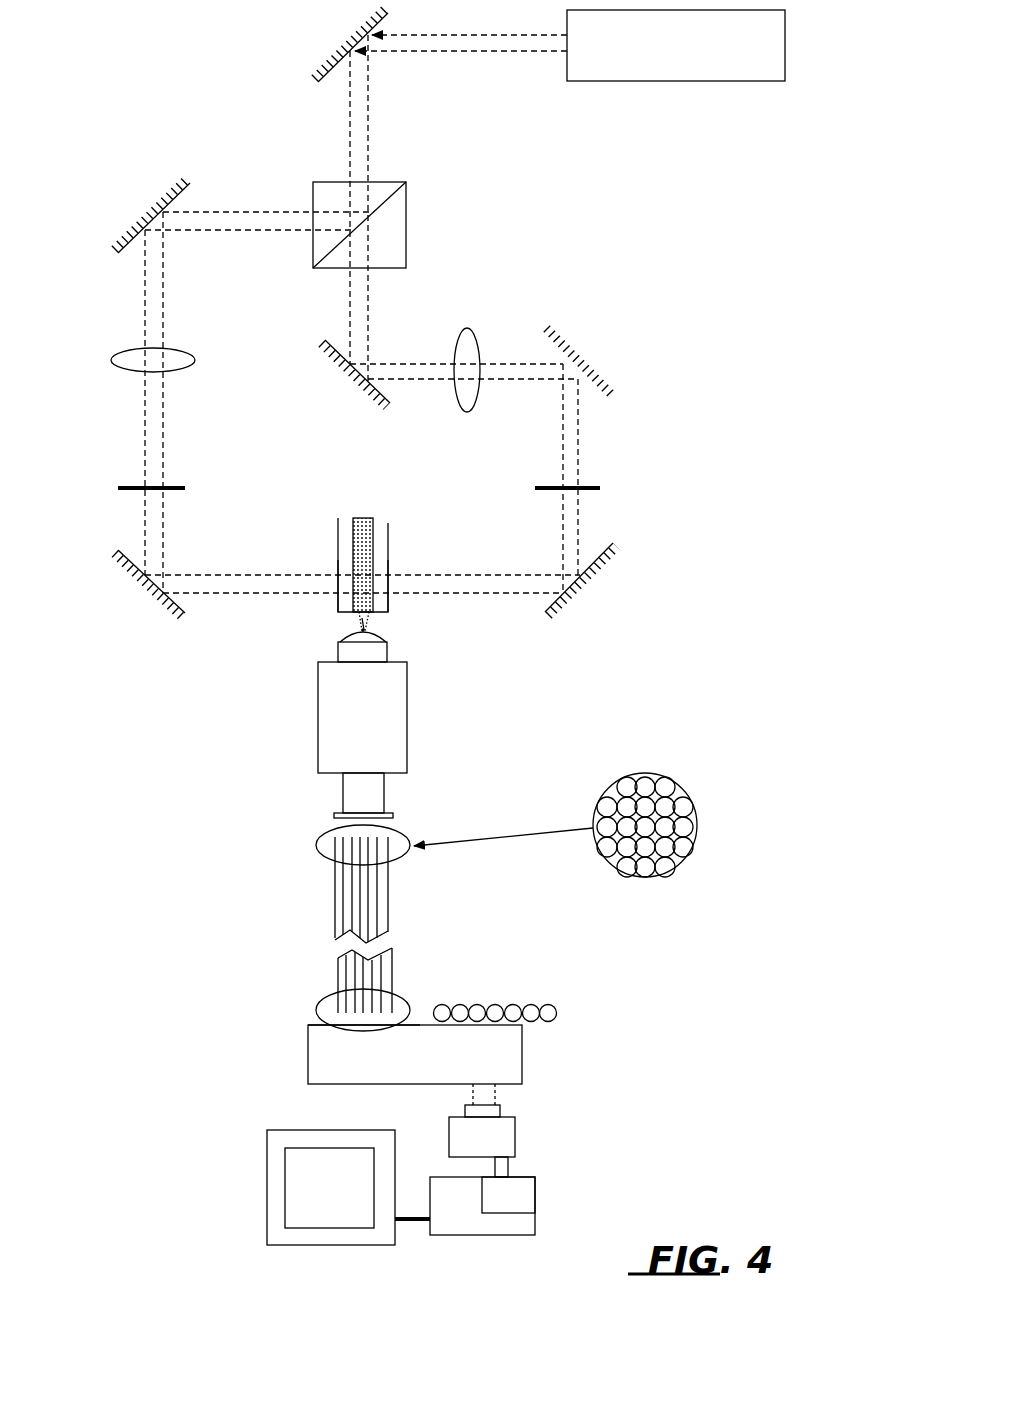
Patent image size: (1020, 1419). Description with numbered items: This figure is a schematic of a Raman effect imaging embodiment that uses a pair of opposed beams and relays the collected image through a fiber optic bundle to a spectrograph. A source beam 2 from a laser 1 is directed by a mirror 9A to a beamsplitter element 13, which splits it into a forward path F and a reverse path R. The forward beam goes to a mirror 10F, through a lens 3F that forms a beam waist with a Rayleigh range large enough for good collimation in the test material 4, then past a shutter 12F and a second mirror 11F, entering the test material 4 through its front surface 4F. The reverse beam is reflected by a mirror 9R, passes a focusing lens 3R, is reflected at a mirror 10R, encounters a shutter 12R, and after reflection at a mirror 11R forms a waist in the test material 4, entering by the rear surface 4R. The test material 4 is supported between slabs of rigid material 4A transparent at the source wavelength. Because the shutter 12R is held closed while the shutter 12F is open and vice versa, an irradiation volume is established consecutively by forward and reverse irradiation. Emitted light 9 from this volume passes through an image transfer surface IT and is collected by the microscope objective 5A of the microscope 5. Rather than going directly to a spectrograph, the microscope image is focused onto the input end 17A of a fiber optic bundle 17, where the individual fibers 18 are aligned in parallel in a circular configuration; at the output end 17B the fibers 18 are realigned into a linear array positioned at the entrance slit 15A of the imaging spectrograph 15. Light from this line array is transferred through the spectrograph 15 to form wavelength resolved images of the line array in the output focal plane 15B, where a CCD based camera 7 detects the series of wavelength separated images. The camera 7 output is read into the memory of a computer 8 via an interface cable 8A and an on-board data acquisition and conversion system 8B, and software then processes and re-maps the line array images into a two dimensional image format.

The laser 1 is at (676, 45).
The source beam 2 is at (458, 193).
The mirror 9A is at (345, 45).
The beamsplitter element 13 is at (380, 225).
The forward beam path F is at (256, 207).
The reverse beam path R is at (374, 311).
The mirror 10F is at (144, 212).
The mirror 10R is at (587, 359).
The mirror 9R is at (346, 373).
The lens 3F is at (135, 361).
The focusing lens 3R is at (470, 356).
The shutter 12F is at (125, 489).
The shutter 12R is at (597, 489).
The second mirror 11F is at (141, 588).
The mirror 11R is at (601, 579).
The test material 4 is at (363, 516).
The slabs of rigid material 4A is at (382, 516).
The front surface 4F is at (335, 603).
The rear surface 4R is at (391, 605).
The emitted light 9 is at (355, 623).
The image transfer surface IT is at (381, 621).
The microscope objective 5A is at (393, 648).
The microscope 5 is at (362, 740).
The fiber optic bundle 17 is at (394, 900).
The input end of the bundle 17A is at (316, 847).
The output end of the bundle 17B is at (320, 1005).
The individual fibers 18 is at (662, 785).
The imaging spectrograph 15 is at (415, 1054).
The entrance slit 15A is at (364, 1044).
The output focal plane 15B is at (502, 1096).
The CCD based camera 7 is at (482, 1137).
The interface cable 8A is at (512, 1165).
The computer 8 is at (401, 1187).
The on-board data acquisition and conversion system 8B is at (508, 1195).